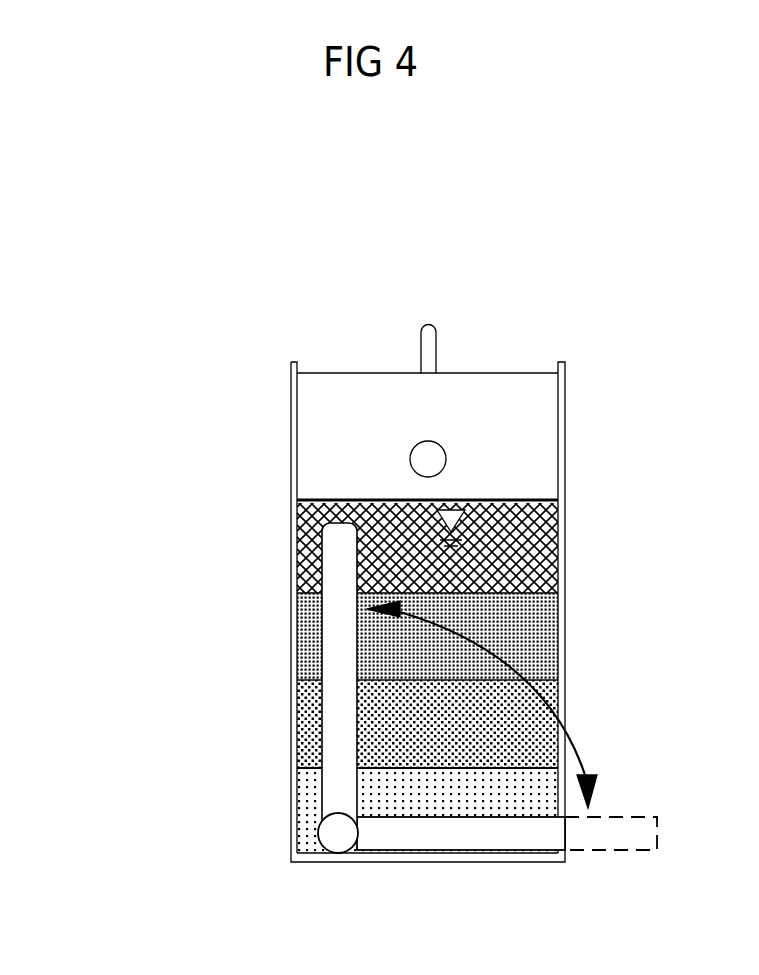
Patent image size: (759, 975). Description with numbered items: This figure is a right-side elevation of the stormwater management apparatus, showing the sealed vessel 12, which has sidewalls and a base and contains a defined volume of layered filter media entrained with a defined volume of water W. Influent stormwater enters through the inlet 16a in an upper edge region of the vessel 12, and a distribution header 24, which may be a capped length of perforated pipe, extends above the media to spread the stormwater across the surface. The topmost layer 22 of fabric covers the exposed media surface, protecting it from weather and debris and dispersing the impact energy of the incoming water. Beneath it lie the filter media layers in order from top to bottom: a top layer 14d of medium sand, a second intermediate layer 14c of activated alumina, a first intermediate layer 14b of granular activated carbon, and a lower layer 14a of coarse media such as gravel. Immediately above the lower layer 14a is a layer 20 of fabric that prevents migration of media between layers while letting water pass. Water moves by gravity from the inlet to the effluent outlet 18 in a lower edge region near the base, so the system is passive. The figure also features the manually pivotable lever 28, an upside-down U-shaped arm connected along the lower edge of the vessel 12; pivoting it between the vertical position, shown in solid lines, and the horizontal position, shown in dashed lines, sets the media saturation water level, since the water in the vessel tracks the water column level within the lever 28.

The vessel 12 is at (565, 407).
The influent inlet 16a is at (430, 323).
The distribution header 24 is at (434, 441).
The topmost layer of fabric 22 is at (562, 499).
The water W is at (566, 530).
The top layer of medium sand 14d is at (297, 565).
The second intermediate layer of activated alumina 14c is at (297, 645).
The first intermediate layer of granular activated carbon 14b is at (297, 735).
The lower layer of coarse media 14a is at (297, 815).
The pivotable lever 28 is at (337, 538).
The effluent outlet 18 is at (322, 836).
The layer of fabric 20 is at (555, 770).